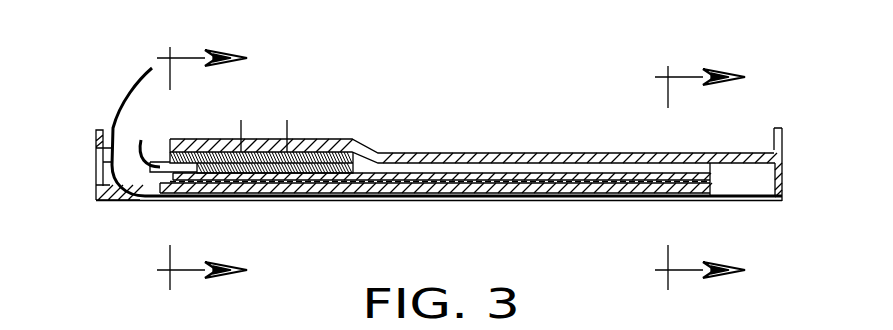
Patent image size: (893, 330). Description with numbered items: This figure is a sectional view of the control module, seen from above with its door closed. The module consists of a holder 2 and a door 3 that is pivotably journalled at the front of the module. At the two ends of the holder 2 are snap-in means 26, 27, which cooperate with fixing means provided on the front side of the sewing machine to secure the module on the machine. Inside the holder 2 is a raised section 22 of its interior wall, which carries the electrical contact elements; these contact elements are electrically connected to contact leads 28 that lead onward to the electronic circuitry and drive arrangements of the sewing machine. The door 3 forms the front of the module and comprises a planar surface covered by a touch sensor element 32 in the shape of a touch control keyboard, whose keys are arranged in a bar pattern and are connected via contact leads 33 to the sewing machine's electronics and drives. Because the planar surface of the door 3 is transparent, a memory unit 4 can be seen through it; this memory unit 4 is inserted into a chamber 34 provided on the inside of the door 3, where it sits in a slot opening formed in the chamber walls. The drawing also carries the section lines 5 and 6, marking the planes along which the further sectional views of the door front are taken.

The holder 2 is at (486, 152).
The door 3 is at (515, 188).
The memory unit 4 is at (563, 175).
The section line 5- 5 is at (700, 176).
The section line 6- 6 is at (202, 170).
The raised section 22 is at (262, 160).
The snap-in means 26 is at (789, 128).
The snap-in means 27 is at (93, 128).
The contact leads 28 is at (141, 141).
The touch sensor element 32 is at (445, 198).
The contact leads 33 is at (129, 90).
The chamber 34 is at (378, 184).